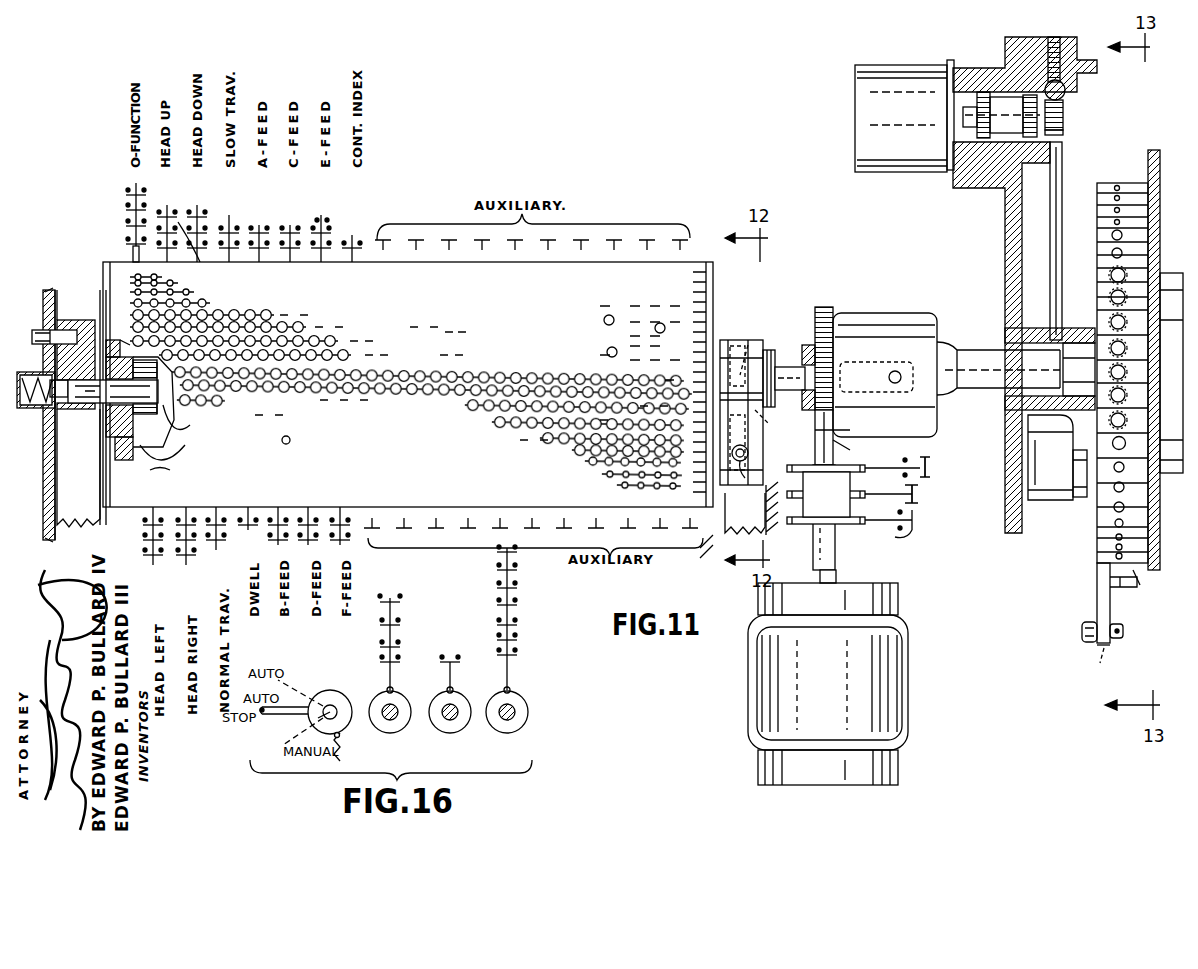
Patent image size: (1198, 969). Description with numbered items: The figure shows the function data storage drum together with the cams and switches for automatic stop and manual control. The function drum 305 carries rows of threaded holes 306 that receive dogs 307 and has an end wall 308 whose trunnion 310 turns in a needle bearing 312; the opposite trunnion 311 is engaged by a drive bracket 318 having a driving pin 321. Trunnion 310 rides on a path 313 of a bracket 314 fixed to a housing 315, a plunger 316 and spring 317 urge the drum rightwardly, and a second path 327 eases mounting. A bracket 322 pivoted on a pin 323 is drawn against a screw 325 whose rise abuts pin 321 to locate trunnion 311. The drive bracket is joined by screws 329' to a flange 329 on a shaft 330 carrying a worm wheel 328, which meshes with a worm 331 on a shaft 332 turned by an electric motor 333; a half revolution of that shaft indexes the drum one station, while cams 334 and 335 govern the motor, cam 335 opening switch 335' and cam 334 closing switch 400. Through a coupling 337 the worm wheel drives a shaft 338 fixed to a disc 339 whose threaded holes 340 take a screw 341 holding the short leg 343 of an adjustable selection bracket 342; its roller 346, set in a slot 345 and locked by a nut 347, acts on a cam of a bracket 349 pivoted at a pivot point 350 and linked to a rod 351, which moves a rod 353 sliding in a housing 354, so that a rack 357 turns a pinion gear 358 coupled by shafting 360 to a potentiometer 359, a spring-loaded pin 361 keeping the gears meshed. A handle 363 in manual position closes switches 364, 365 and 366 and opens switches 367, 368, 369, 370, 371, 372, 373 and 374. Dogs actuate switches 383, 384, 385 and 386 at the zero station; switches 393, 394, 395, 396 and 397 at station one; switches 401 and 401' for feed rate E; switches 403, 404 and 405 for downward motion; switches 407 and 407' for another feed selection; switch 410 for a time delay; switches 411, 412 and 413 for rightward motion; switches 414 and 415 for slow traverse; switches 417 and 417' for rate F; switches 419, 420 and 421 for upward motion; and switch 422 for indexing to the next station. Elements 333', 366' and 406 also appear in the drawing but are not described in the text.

In FIG. 11, the function drum 305 is at (460, 360).
In FIG. 11, the threaded holes 306 is at (335, 330).
In FIG. 11, the dogs 307 is at (130, 258).
In FIG. 11, the end wall 308 is at (118, 345).
In FIG. 11, the trunnion 310 is at (172, 426).
In FIG. 11, the trunnion 311 is at (752, 352).
In FIG. 11, the needle bearing 312 is at (160, 440).
In FIG. 11, the path 313 is at (90, 502).
In FIG. 11, the bracket 314 is at (100, 530).
In FIG. 11, the housing 315 is at (46, 292).
In FIG. 11, the plunger 316 is at (58, 400).
In FIG. 11, the spring 317 is at (52, 410).
In FIG. 11, the drive bracket 318 is at (820, 294).
In FIG. 11, the driving pin 321 is at (752, 455).
In FIG. 11, the bracket 322 is at (735, 340).
In FIG. 11, the pin 323 is at (748, 345).
In FIG. 11, the screw 325 is at (745, 513).
In FIG. 11, the path 327 is at (713, 530).
In FIG. 11, the worm wheel 328 is at (840, 432).
In FIG. 11, the flange 329 is at (784, 366).
In FIG. 11, the screws 329' is at (781, 422).
In FIG. 11, the shaft 330 is at (822, 378).
In FIG. 11, the worm 331 is at (833, 350).
In FIG. 11, the shaft 332 is at (838, 556).
In FIG. 11, the electric motor 333 is at (850, 684).
In FIG. 11, the switch 333' is at (882, 457).
In FIG. 11, the cam 334 is at (870, 525).
In FIG. 11, the cam 335 is at (852, 501).
In FIG. 11, the switch 335' is at (947, 493).
In FIG. 11, the coupling 337 is at (896, 288).
In FIG. 11, the shaft 338 is at (985, 360).
In FIG. 11, the disc 339 is at (1135, 188).
In FIG. 11, the threaded holes 340 is at (1125, 270).
In FIG. 11, the screw 341 is at (1097, 590).
In FIG. 11, the adjustable selection bracket 342 is at (1064, 655).
In FIG. 11, the short leg 343 is at (1130, 578).
In FIG. 11, the slot 345 is at (1102, 652).
In FIG. 11, the roller 346 is at (1082, 628).
In FIG. 11, the nut 347 is at (1116, 642).
In FIG. 11, the bracket 349 is at (1060, 496).
In FIG. 11, the pivot point 350 is at (1082, 500).
In FIG. 11, the rod 351 is at (1063, 160).
In FIG. 11, the rod 353 is at (1066, 90).
In FIG. 11, the housing 354 is at (982, 160).
In FIG. 11, the rack 357 is at (1068, 102).
In FIG. 11, the pinion gear 358 is at (1063, 132).
In FIG. 11, the potentiometer 359 is at (888, 78).
In FIG. 11, the shafting 360 is at (1002, 110).
In FIG. 11, the spring-loaded pin 361 is at (1070, 65).
In FIG. 16, the handle 363 is at (265, 722).
In FIG. 16, the switch 364 is at (378, 657).
In FIG. 16, the switch 365 is at (378, 641).
In FIG. 16, the switch 366 is at (362, 627).
In FIG. 16, the contact 366' is at (402, 651).
In FIG. 16, the switch 367 is at (516, 654).
In FIG. 16, the switch 368 is at (516, 638).
In FIG. 16, the switch 369 is at (516, 622).
In FIG. 16, the switch 370 is at (516, 603).
In FIG. 16, the switch 371 is at (498, 588).
In FIG. 16, the switch 372 is at (498, 570).
In FIG. 16, the switch 373 is at (498, 552).
In FIG. 16, the switch 374 is at (450, 656).
In FIG. 11, the switch 383 is at (126, 220).
In FIG. 11, the switch 384 is at (126, 206).
In FIG. 11, the switch 385 is at (126, 246).
In FIG. 11, the switch 386 is at (126, 188).
In FIG. 11, the switch 393 is at (140, 540).
In FIG. 11, the switch 394 is at (140, 545).
In FIG. 11, the switch 395 is at (145, 568).
In FIG. 11, the switch 396 is at (218, 548).
In FIG. 11, the switch 397 is at (215, 520).
In FIG. 11, the switch 400 is at (898, 537).
In FIG. 11, the switch 401 is at (361, 281).
In FIG. 11, the switch 401' is at (335, 228).
In FIG. 11, the switch 403 is at (240, 268).
In FIG. 11, the switch 404 is at (212, 245).
In FIG. 11, the switch 405 is at (200, 212).
In FIG. 11, the contact 406 is at (246, 230).
In FIG. 11, the switch 407 is at (324, 512).
In FIG. 11, the switch 407' is at (307, 502).
In FIG. 11, the switch 410 is at (262, 525).
In FIG. 11, the switch 411 is at (172, 535).
In FIG. 11, the switch 412 is at (205, 500).
In FIG. 11, the switch 413 is at (190, 572).
In FIG. 11, the switch 414 is at (230, 226).
In FIG. 11, the switch 415 is at (238, 250).
In FIG. 11, the switch 417 is at (363, 512).
In FIG. 11, the switch 417' is at (379, 556).
In FIG. 11, the switch 419 is at (195, 265).
In FIG. 11, the switch 420 is at (185, 250).
In FIG. 11, the switch 421 is at (168, 212).
In FIG. 11, the switch 422 is at (335, 250).